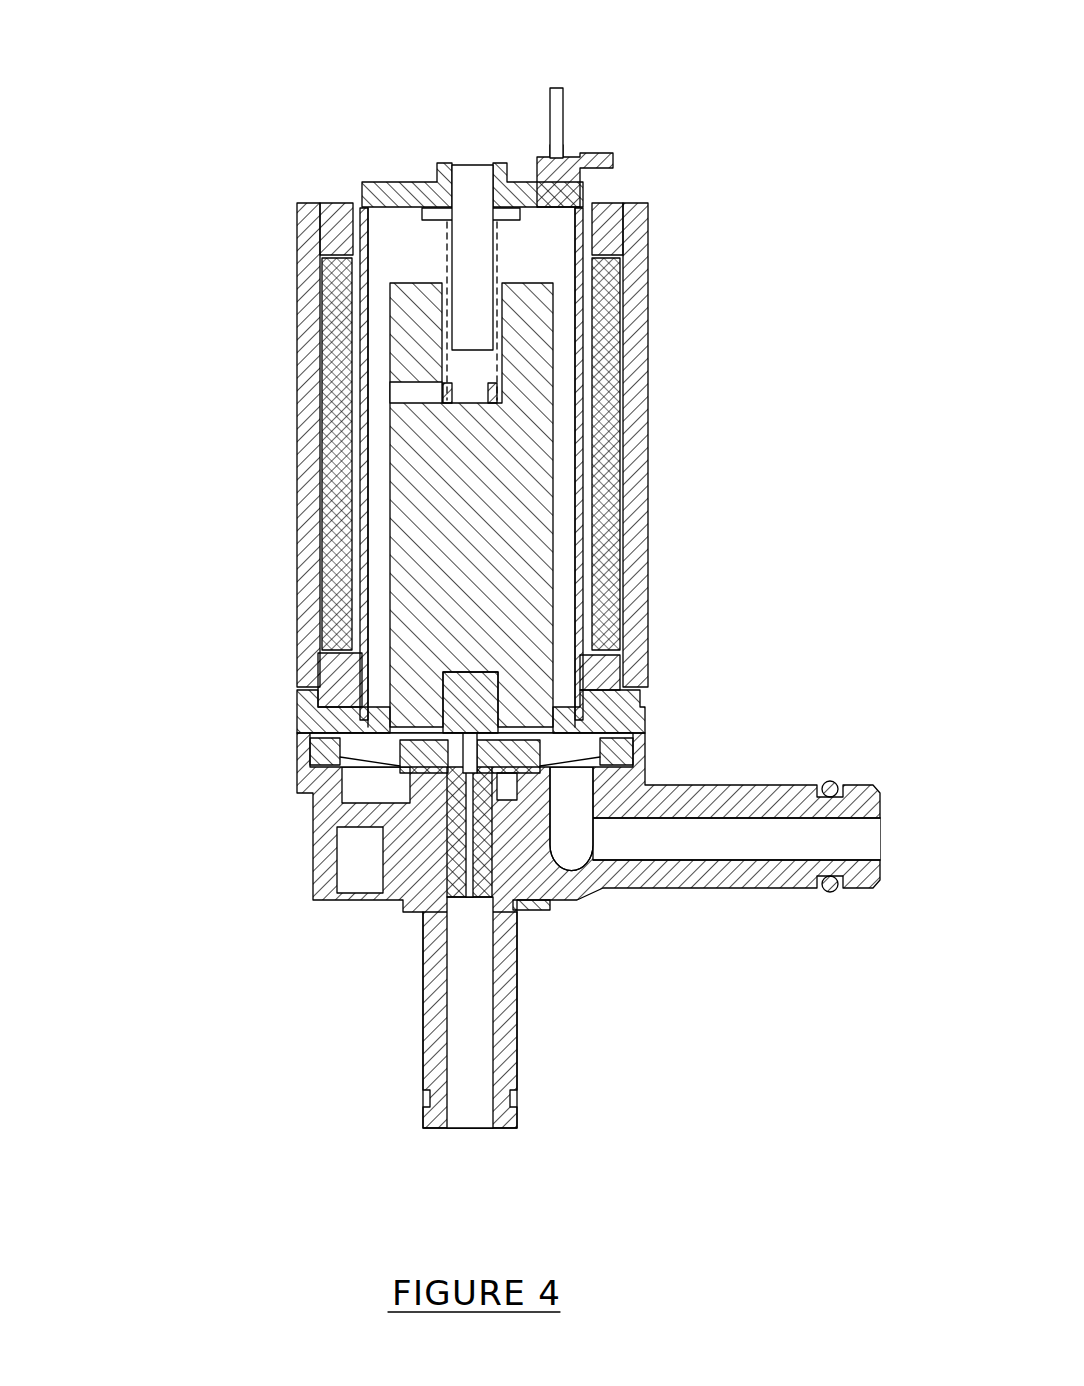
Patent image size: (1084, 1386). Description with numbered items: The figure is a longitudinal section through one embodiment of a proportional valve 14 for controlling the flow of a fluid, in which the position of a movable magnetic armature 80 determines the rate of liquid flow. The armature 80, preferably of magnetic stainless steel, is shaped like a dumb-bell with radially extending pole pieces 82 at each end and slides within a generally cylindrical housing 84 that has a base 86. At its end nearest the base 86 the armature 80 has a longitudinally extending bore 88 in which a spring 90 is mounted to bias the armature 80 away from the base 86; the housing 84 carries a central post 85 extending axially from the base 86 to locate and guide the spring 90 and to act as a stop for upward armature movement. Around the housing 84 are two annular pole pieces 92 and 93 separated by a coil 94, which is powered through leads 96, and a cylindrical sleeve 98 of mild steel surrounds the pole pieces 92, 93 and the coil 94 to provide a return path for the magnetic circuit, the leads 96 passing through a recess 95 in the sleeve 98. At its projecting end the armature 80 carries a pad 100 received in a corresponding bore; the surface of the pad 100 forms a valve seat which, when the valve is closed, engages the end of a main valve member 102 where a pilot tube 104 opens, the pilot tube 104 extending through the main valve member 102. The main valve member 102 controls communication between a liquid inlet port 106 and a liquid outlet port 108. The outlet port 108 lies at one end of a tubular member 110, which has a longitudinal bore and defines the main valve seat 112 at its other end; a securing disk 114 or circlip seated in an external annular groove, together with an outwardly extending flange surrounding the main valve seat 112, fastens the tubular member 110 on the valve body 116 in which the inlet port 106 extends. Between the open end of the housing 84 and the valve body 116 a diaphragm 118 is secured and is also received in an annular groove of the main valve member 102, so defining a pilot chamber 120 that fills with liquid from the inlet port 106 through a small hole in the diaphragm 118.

The proportional valve 14 is at (245, 117).
The magnetic armature 80 is at (505, 518).
The pole pieces 82 is at (565, 330).
The housing 84 is at (570, 577).
The central post 85 is at (475, 237).
The base 86 is at (393, 180).
The bore 88 is at (500, 383).
The spring 90 is at (497, 258).
The annular pole piece 92 is at (340, 237).
The annular pole piece 93 is at (318, 665).
The coil 94 is at (335, 552).
The recess 95 is at (630, 285).
The leads 96 is at (555, 105).
The cylindrical sleeve 98 is at (300, 450).
The pad 100 is at (487, 713).
The main valve member 102 is at (457, 835).
The pilot tube 104 is at (470, 920).
The liquid inlet port 106 is at (787, 848).
The liquid outlet port 108 is at (473, 1057).
The tubular member 110 is at (505, 1062).
The main valve seat 112 is at (510, 797).
The securing disk 114 is at (547, 912).
The valve body 116 is at (320, 883).
The diaphragm 118 is at (590, 757).
The pilot chamber 120 is at (378, 753).